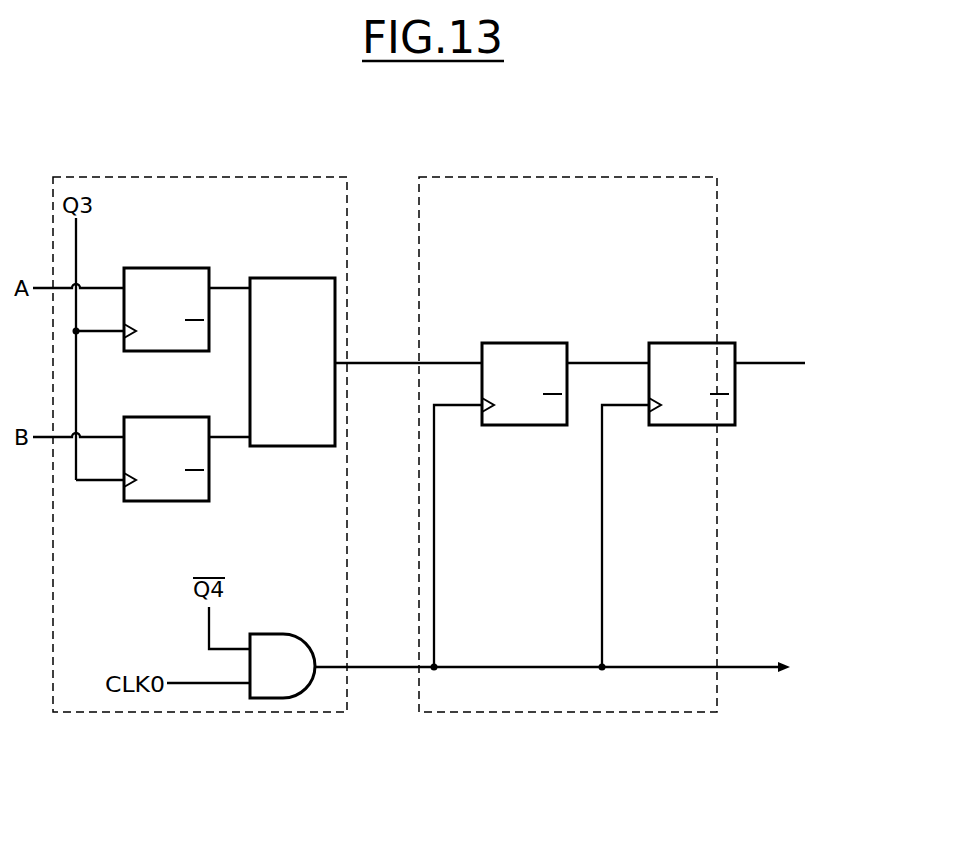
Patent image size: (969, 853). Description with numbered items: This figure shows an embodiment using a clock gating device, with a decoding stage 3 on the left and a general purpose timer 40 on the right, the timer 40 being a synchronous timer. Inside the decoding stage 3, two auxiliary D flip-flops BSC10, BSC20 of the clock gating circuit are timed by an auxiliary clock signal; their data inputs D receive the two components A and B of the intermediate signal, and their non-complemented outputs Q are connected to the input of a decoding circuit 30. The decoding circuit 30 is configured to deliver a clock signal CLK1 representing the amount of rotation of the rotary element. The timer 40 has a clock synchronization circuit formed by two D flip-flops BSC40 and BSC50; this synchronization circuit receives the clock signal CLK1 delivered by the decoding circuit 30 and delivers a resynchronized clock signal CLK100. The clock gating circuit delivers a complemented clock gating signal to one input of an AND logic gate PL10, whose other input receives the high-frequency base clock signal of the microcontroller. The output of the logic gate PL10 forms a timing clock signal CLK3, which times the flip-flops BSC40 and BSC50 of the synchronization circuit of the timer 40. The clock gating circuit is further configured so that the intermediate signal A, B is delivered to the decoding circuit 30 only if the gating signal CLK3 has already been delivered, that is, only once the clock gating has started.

The decoding stage 3 is at (200, 176).
The general purpose timer 40 is at (567, 176).
The decoding circuit 30 is at (292, 362).
The auxiliary D flip-flop BSC10 is at (166, 267).
The auxiliary D flip-flop BSC20 is at (166, 416).
The D flip-flop BSC40 is at (523, 342).
The D flip-flop BSC50 is at (691, 342).
The AND logic gate PL10 is at (267, 632).
The clock signal CLK1 is at (408, 350).
The timing clock signal CLK3 is at (435, 536).
The resynchronized clock signal CLK100 is at (790, 365).